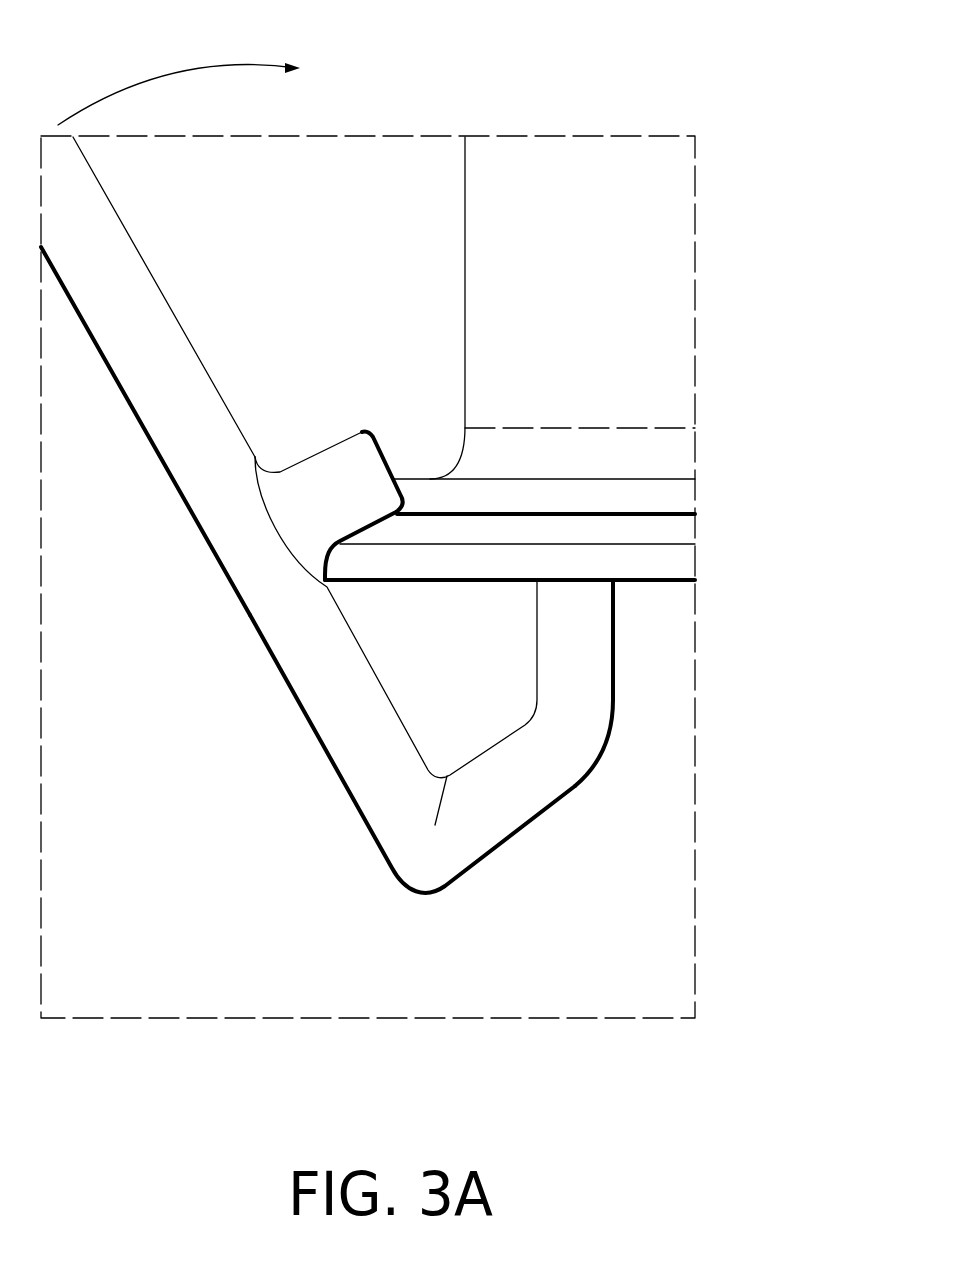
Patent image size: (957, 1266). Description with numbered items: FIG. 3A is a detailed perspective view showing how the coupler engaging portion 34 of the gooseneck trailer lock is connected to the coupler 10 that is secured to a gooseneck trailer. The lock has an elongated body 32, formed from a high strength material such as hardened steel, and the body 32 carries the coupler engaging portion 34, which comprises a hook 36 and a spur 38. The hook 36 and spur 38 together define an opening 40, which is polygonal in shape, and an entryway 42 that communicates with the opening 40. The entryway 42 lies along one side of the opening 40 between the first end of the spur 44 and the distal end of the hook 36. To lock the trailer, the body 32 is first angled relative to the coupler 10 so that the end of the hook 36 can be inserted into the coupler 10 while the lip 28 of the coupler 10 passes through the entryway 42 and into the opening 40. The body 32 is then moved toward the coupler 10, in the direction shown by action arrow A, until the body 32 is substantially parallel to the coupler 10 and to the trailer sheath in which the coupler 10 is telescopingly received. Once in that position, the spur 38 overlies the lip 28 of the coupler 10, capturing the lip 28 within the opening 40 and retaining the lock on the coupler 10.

The coupler 10 is at (740, 163).
The action arrow A is at (172, 72).
The lip 28 is at (373, 563).
The elongated body 32 is at (143, 295).
The coupler engaging portion 34 is at (270, 873).
The hook 36 is at (588, 640).
The spur 38 is at (310, 460).
The opening 40 is at (428, 673).
The entryway 42 is at (488, 544).
The first end of the spur 44 is at (372, 436).